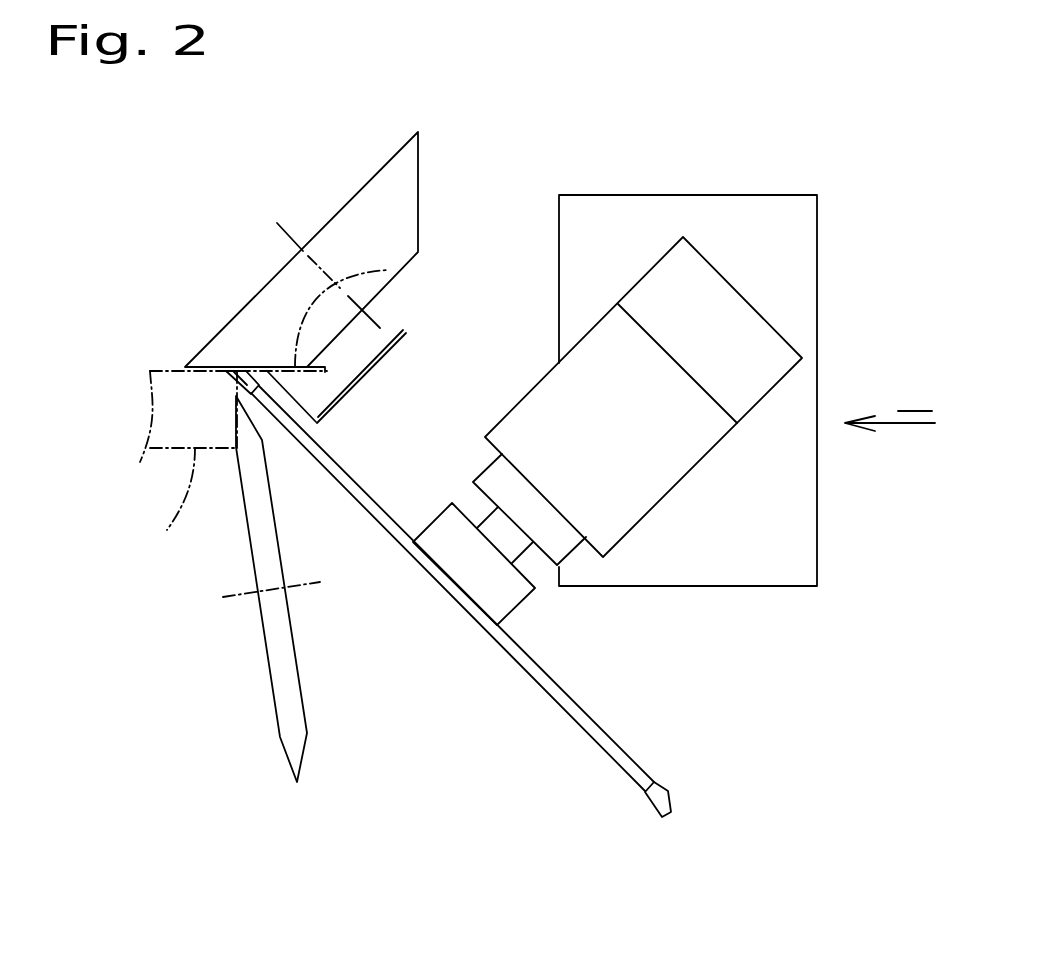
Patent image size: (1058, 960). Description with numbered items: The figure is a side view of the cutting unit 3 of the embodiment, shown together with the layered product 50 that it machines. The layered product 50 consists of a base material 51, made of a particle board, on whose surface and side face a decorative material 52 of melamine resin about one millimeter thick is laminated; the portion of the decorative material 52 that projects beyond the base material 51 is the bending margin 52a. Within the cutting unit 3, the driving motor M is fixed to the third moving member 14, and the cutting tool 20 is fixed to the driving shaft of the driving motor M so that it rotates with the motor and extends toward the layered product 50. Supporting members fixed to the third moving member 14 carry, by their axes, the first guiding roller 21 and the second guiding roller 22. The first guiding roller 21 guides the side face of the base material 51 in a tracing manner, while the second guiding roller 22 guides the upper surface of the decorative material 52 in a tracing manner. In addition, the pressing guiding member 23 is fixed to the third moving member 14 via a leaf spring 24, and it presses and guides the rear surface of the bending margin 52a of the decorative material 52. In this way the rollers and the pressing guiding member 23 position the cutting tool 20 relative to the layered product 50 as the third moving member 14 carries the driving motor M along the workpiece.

The cutting unit 3 is at (630, 167).
The third moving member 14 is at (792, 510).
The driving motor M is at (712, 310).
The cutting tool 20 is at (582, 710).
The first guiding roller 21 is at (300, 680).
The second guiding roller 22 is at (418, 203).
The pressing guiding member 23 is at (317, 398).
The leaf spring 24 is at (395, 348).
The layered product 50 is at (170, 367).
The base material 51 is at (171, 514).
The decorative material 52 is at (262, 367).
The bending margin 52a is at (388, 270).